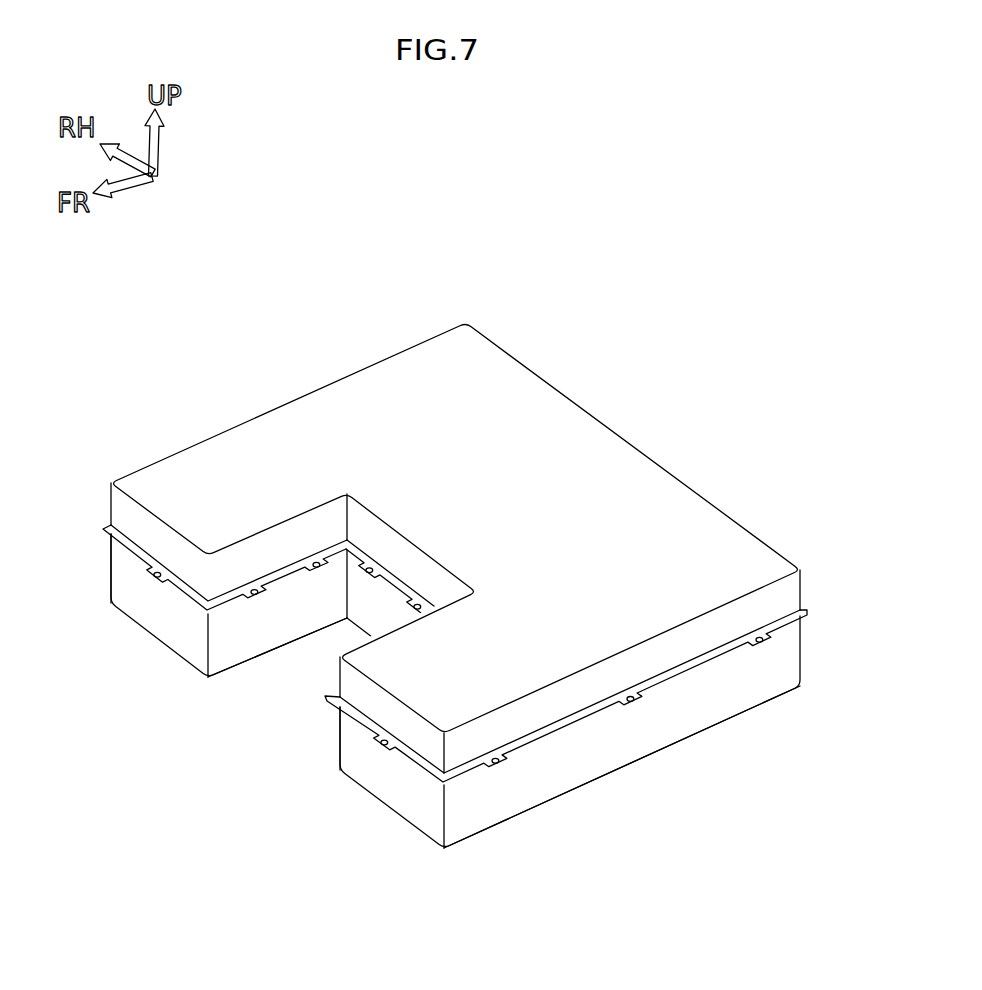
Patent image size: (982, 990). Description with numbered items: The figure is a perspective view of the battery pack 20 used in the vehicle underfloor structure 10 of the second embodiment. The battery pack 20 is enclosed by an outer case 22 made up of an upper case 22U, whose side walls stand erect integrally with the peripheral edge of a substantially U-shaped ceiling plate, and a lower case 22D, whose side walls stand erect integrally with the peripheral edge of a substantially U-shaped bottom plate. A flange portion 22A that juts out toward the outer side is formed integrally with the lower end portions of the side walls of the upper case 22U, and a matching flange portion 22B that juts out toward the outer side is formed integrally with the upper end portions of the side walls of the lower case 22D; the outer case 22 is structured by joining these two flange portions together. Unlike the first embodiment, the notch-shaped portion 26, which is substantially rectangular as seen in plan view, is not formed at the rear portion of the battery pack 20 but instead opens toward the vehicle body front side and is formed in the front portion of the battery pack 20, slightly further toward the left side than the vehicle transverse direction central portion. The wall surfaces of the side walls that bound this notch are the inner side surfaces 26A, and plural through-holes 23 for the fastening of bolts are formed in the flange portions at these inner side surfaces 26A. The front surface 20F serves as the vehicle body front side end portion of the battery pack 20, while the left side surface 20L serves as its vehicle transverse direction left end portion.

The vehicle underfloor structure 10 is at (486, 590).
The battery pack 20 is at (486, 580).
The front surface 20F is at (147, 607).
The left side surface 20L is at (617, 733).
The outer case 22 is at (487, 540).
The upper case 22U is at (280, 432).
The flange portion 22A is at (807, 610).
The flange portion 22B is at (657, 688).
The lower case 22D is at (558, 795).
The through-hole 23 is at (374, 570).
The notch-shaped portion 26 is at (282, 620).
The inner side surface 26A is at (240, 655).